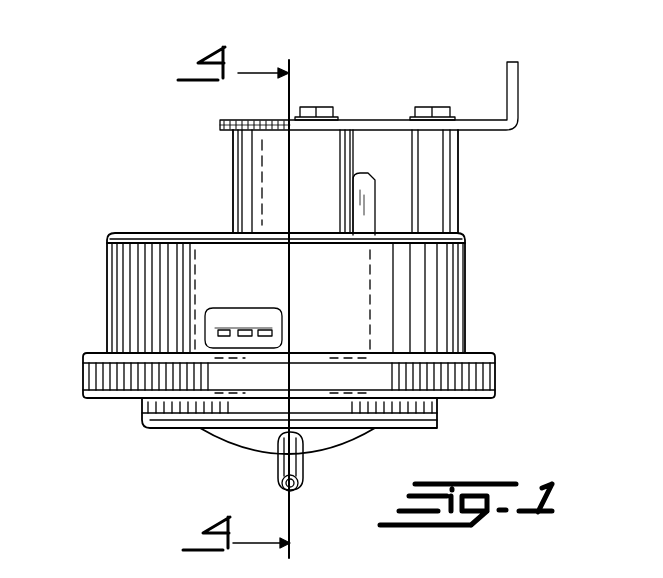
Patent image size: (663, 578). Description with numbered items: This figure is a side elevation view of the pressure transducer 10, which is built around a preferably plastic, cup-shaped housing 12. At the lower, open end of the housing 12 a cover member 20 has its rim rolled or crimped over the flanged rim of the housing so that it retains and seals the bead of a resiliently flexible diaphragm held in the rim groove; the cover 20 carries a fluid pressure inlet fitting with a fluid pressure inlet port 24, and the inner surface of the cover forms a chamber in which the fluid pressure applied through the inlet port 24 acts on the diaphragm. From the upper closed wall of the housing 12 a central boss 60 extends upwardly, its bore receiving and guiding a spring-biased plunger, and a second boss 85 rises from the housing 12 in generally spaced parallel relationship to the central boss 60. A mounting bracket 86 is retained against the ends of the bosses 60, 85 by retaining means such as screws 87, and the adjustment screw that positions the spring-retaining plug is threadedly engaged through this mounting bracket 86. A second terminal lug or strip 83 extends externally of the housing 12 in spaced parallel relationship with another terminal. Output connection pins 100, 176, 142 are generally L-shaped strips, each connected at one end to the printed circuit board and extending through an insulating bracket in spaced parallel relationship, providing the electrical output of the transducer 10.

The transducer 10 is at (103, 243).
The housing 12 is at (465, 285).
The cover member 20 is at (440, 421).
The fluid pressure inlet port 24 is at (296, 487).
The boss 60 is at (233, 185).
The second terminal lug or strip 83 is at (375, 178).
The second boss 85 is at (460, 185).
The mounting bracket 86 is at (378, 120).
The screws 87 is at (320, 107).
The output connection pin 100 is at (222, 330).
The output connection pin 142 is at (265, 330).
The output connection pin 176 is at (244, 330).